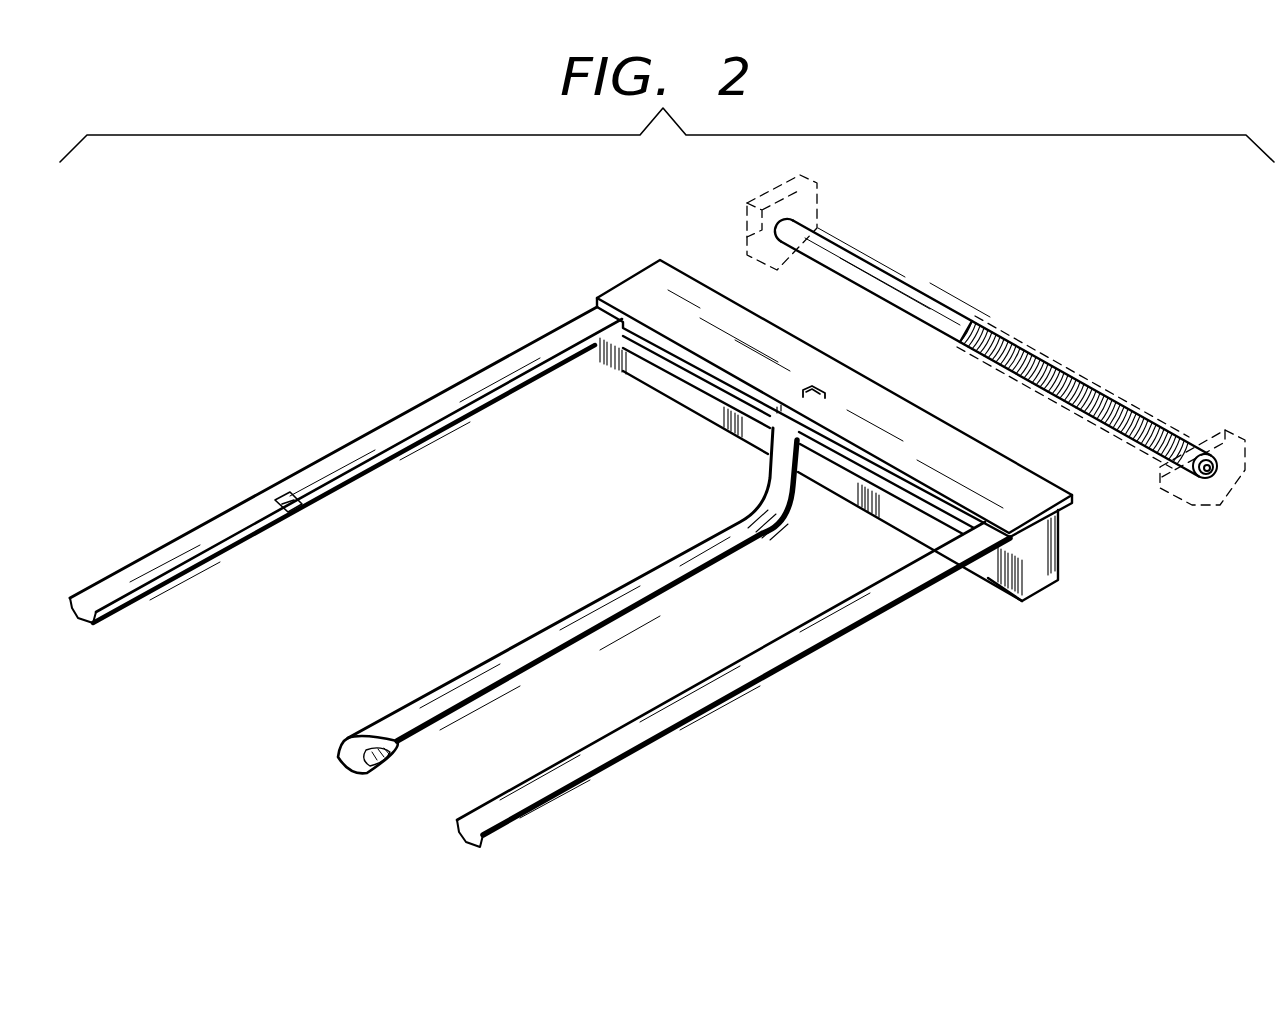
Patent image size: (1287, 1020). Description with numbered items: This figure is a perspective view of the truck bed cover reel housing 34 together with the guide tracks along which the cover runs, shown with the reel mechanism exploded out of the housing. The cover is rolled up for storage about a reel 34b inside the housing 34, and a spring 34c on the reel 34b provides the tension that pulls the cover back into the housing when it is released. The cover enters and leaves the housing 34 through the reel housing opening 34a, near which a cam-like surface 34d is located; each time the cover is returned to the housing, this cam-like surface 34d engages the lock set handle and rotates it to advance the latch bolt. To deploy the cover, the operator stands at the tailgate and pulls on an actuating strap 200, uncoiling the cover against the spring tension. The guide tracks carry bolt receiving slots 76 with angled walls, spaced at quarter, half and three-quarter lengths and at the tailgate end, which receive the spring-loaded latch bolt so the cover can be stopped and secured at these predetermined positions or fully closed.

The reel housing 34 is at (960, 455).
The reel housing opening 34a is at (783, 405).
The reel 34b is at (868, 270).
The spring 34c is at (1065, 380).
The cam-like surface 34d is at (815, 392).
The bolt receiving slot 76 is at (302, 507).
The actuating strap 200 is at (420, 707).